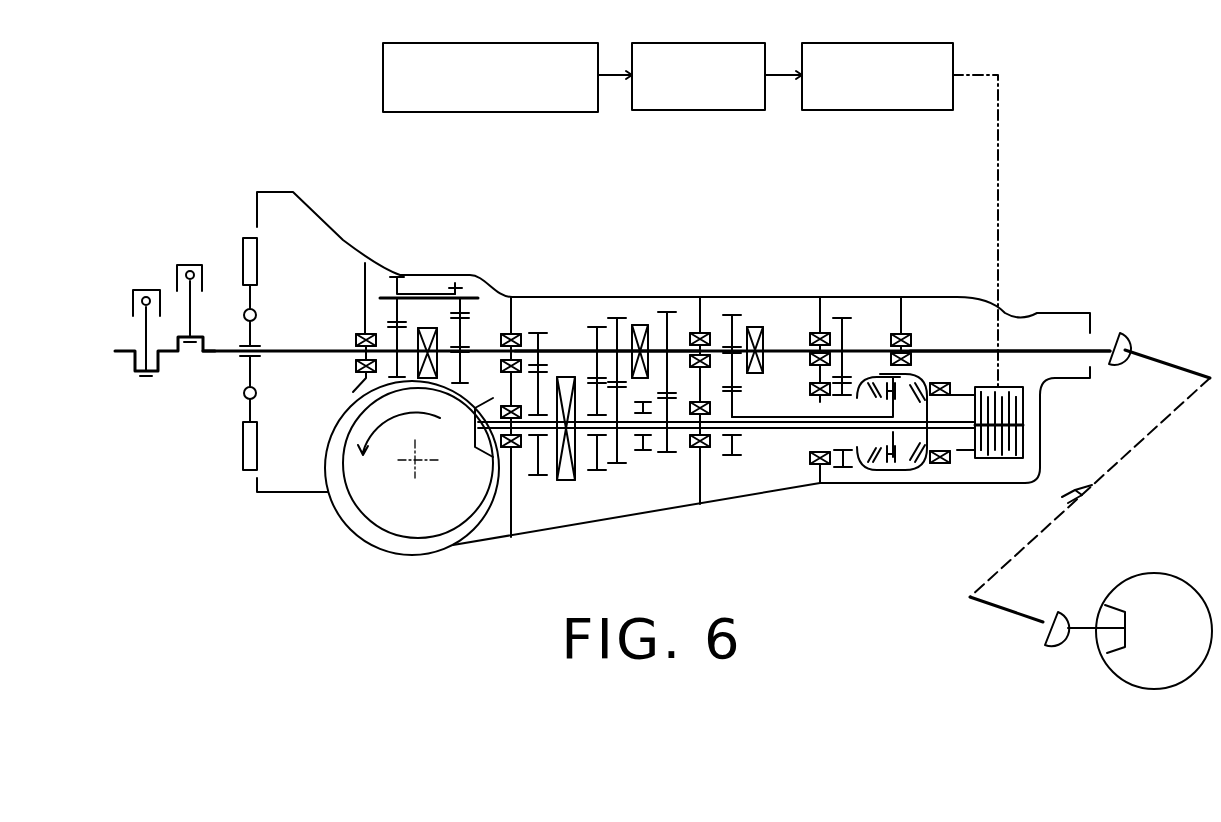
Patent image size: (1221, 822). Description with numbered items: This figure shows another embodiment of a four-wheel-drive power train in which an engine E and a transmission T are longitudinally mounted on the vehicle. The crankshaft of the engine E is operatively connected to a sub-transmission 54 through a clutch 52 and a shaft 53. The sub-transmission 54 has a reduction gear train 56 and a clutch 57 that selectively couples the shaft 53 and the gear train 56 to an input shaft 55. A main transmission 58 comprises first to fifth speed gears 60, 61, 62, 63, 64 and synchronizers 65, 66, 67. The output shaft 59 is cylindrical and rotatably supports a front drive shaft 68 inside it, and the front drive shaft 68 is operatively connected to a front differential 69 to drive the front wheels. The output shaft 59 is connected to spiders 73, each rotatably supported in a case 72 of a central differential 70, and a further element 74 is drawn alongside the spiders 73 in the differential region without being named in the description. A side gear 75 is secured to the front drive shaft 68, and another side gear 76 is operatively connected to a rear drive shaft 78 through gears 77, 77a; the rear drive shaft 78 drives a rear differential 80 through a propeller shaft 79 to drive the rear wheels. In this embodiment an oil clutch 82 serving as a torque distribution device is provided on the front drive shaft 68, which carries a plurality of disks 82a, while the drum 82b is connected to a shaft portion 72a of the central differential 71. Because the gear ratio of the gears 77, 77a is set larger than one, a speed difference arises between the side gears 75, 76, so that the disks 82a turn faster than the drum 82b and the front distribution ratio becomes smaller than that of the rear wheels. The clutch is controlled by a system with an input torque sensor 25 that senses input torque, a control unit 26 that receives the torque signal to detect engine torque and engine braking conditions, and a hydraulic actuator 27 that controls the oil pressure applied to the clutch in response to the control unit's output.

The input torque sensor 25 is at (580, 42).
The control unit 26 is at (756, 42).
The hydraulic actuator 27 is at (940, 42).
The engine E is at (161, 271).
The transmission T is at (726, 288).
The clutch 52 is at (257, 268).
The shaft 53 is at (312, 351).
The sub-transmission 54 is at (430, 285).
The input shaft 55 is at (470, 352).
The reduction gear train 56 is at (480, 285).
The clutch 57 is at (443, 372).
The main transmission 58 is at (633, 301).
The output shaft 59 is at (633, 430).
The first speed gear 60 is at (545, 325).
The second speed gear 61 is at (590, 322).
The third speed gear 62 is at (612, 318).
The fourth speed gear 63 is at (672, 312).
The fifth speed gear 64 is at (735, 312).
The synchronizer 65 is at (560, 480).
The synchronizer 66 is at (643, 325).
The synchronizer 67 is at (765, 350).
The front drive shaft 68 is at (780, 435).
The front differential 69 is at (455, 534).
The central differential 70 is at (933, 312).
The central differential 71 is at (872, 363).
The case 72 is at (928, 470).
The shaft portion 72a is at (965, 455).
The spiders 73 is at (897, 472).
The synchronizer ring 74 is at (880, 480).
The side gear 75 is at (934, 452).
The side gear 76 is at (860, 468).
The gear 77 is at (820, 458).
The gear 77a is at (843, 318).
The rear drive shaft 78 is at (968, 332).
The propeller shaft 79 is at (1185, 365).
The rear differential 80 is at (1113, 677).
The oil clutch 82 is at (1033, 415).
The disks 82a is at (1015, 447).
The drum 82b is at (1010, 462).